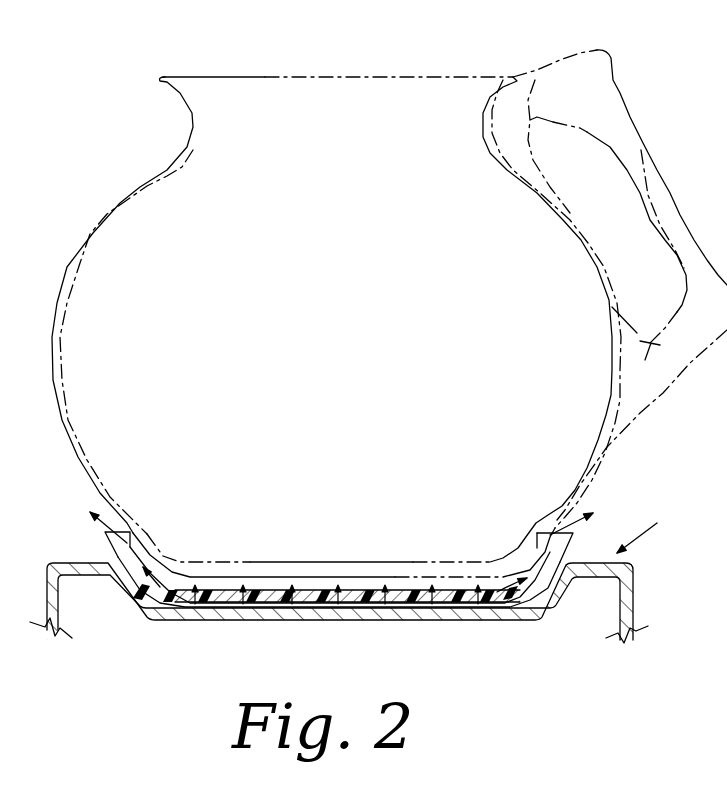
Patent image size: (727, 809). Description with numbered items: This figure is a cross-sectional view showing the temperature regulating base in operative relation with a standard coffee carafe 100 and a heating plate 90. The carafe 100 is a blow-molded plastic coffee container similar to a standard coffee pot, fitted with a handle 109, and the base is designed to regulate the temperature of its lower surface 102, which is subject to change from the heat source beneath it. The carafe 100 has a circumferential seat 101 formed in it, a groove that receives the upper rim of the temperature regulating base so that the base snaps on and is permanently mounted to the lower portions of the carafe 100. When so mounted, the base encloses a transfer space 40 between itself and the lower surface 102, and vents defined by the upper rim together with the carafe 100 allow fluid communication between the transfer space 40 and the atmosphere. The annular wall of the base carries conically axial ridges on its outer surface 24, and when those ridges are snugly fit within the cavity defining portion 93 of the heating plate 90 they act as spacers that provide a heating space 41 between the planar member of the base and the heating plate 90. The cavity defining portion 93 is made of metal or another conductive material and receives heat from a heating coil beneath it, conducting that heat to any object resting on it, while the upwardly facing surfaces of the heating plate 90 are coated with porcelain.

The carafe 100 is at (130, 190).
The handle 109 is at (603, 63).
The lower surface 102 is at (385, 568).
The circumferential seat 101 is at (138, 543).
The outer surface 24 is at (108, 547).
The transfer space 40 is at (273, 586).
The heating space 41 is at (318, 607).
The heating plate 90 is at (356, 579).
The cavity defining portion 93 is at (380, 614).